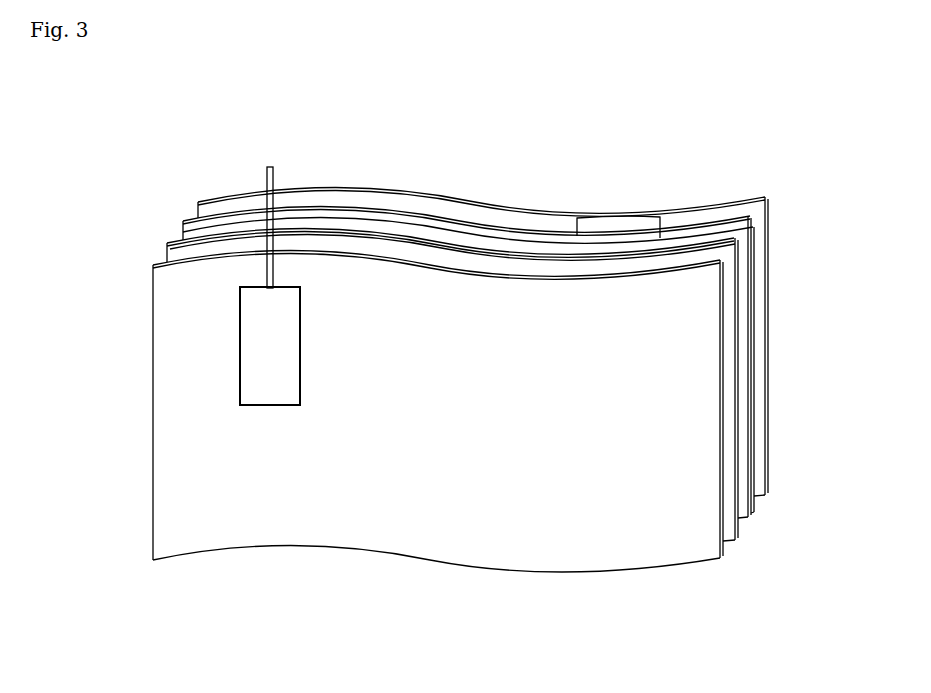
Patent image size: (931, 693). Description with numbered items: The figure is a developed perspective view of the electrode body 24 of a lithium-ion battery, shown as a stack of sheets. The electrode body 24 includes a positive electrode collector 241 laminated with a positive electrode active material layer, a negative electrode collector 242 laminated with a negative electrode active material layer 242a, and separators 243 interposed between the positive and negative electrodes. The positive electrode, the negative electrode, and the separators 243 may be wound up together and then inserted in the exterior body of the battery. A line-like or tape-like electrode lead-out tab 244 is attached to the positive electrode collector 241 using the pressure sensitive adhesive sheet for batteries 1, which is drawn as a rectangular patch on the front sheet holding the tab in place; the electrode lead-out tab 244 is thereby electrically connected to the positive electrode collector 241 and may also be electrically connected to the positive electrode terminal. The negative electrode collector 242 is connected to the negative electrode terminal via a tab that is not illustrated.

The pressure sensitive adhesive sheet for batteries 1 is at (240, 358).
The electrode body 24 is at (510, 384).
The positive electrode collector 241 is at (607, 572).
The negative electrode collector 242 is at (577, 233).
The negative electrode active material layer 242a is at (658, 240).
The separators 243 is at (497, 248).
The electrode lead-out tab 244 is at (277, 175).